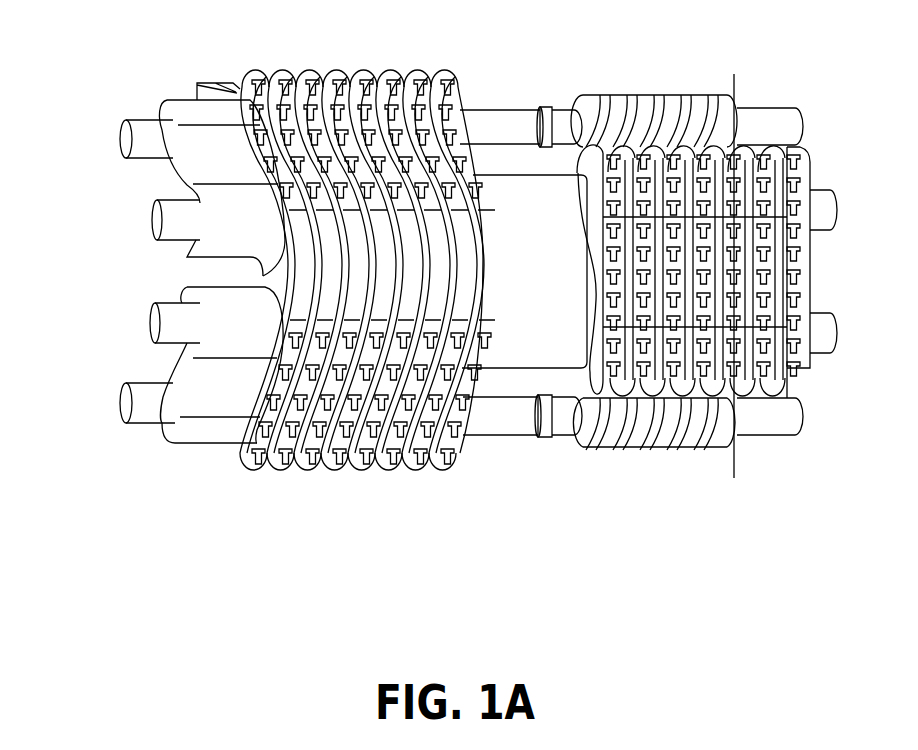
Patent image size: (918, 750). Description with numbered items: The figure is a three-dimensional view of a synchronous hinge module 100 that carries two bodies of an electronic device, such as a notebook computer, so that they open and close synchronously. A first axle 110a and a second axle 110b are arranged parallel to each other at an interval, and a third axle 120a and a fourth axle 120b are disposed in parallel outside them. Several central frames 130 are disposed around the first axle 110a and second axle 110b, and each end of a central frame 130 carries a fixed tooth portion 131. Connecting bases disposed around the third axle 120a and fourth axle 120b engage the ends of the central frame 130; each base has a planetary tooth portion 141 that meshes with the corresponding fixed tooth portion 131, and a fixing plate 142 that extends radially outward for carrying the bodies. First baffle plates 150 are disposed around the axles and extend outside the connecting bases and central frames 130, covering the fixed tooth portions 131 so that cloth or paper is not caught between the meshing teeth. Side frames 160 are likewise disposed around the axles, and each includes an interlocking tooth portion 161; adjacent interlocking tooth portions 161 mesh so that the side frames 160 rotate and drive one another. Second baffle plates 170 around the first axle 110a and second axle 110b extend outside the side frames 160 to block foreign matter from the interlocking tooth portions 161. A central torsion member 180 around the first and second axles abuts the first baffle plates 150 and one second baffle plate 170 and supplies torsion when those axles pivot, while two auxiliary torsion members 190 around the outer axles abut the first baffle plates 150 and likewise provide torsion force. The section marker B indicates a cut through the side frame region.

The synchronous hinge module 100 is at (852, 582).
The first axle 110a is at (170, 221).
The second axle 110b is at (170, 322).
The third axle 120a is at (140, 139).
The fourth axle 120b is at (140, 404).
The central frame 130 is at (470, 275).
The fixed tooth portion 131 is at (465, 177).
The planetary tooth portion 141 is at (447, 95).
The fixing plate 142 is at (193, 83).
The first baffle plate 150 is at (465, 128).
The side frame 160 is at (592, 112).
The interlocking tooth portion 161 is at (620, 178).
The second baffle plate 170 is at (603, 385).
The central torsion member 180 is at (528, 355).
The auxiliary torsion member 190 is at (232, 230).
The section line B is at (735, 277).